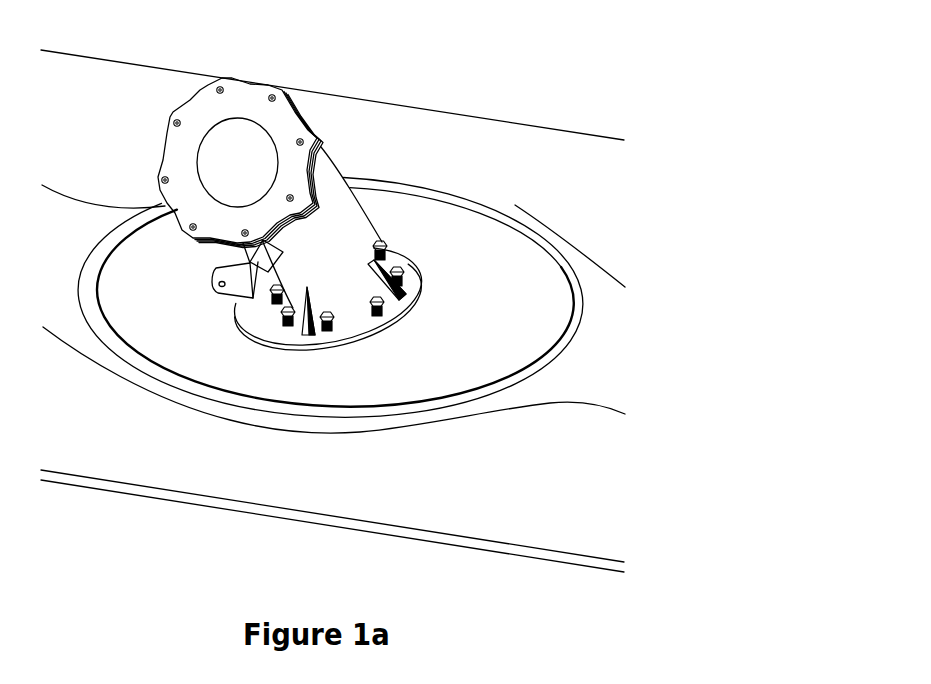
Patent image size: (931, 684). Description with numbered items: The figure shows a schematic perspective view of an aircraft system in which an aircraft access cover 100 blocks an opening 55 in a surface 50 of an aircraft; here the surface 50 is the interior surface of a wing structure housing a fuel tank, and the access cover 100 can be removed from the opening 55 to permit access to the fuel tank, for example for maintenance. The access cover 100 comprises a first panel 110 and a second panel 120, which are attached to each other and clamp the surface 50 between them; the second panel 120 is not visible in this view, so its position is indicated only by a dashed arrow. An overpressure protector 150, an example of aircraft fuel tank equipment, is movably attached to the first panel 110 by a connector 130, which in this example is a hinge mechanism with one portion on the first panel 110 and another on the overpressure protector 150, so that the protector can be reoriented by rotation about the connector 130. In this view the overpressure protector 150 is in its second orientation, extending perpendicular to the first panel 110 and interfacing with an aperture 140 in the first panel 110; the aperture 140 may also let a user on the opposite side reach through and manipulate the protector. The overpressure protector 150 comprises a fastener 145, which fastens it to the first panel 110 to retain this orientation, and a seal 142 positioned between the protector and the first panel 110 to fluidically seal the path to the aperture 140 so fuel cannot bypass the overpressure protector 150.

The surface 50 is at (333, 143).
The opening 55 is at (427, 308).
The aircraft access cover 100 is at (330, 230).
The first panel 110 is at (500, 166).
The second panel 120 is at (333, 449).
The connector 130 is at (147, 324).
The aperture 140 is at (366, 380).
The seal 142 is at (244, 360).
The fastener 145 is at (390, 302).
The overpressure protector 150 is at (284, 168).